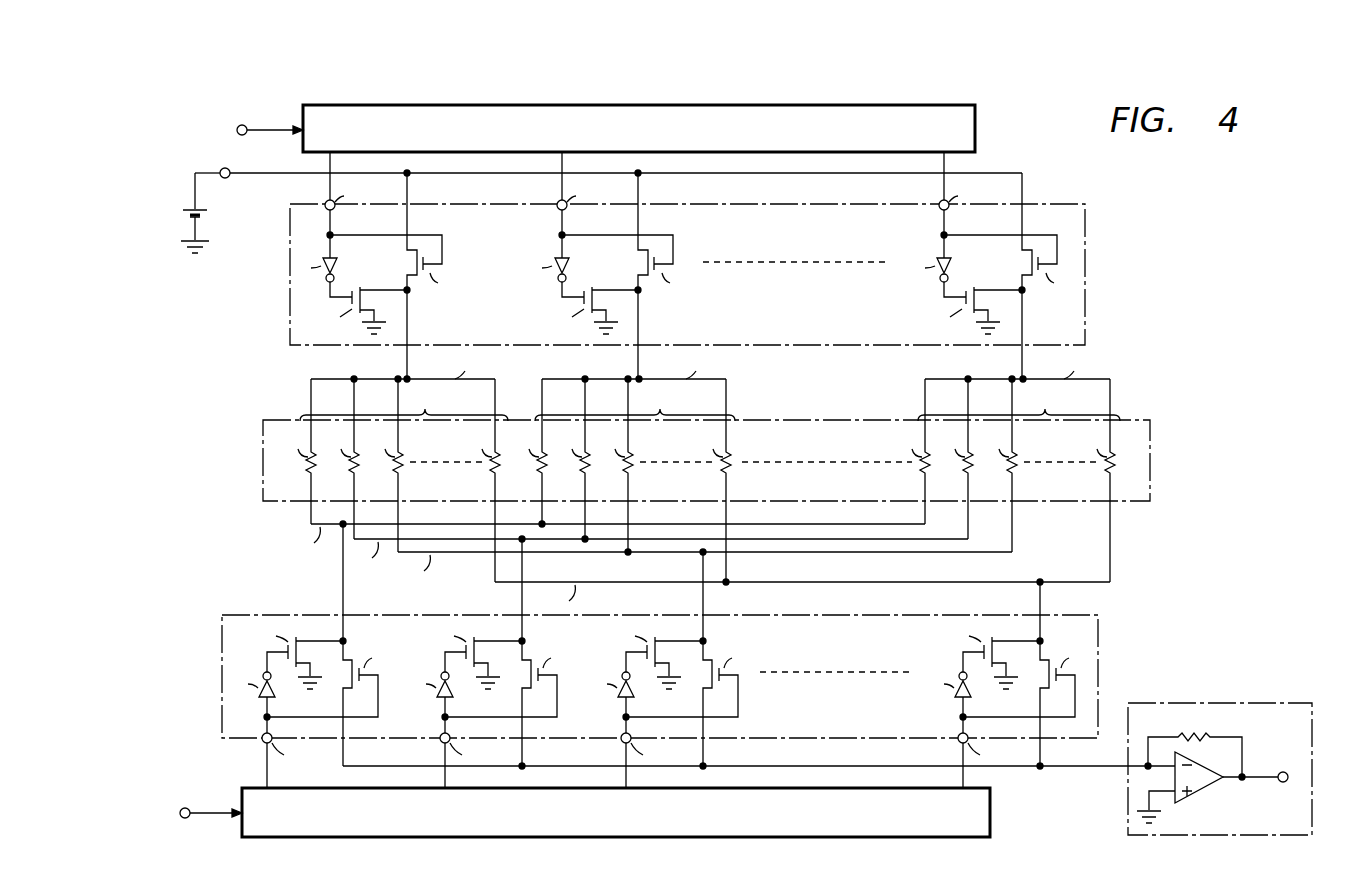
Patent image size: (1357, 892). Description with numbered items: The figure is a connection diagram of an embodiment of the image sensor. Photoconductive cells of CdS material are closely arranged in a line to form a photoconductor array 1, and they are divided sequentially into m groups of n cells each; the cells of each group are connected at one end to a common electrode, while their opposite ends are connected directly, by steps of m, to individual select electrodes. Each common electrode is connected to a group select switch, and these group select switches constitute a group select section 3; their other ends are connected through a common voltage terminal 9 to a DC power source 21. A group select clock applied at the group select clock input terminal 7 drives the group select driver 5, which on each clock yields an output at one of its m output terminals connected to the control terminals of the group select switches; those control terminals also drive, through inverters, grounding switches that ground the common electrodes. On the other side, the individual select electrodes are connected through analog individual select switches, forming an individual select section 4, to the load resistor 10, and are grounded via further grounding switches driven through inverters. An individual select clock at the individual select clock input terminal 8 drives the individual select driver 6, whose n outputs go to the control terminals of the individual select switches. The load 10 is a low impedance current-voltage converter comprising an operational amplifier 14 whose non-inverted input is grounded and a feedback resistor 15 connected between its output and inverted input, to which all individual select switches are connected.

The photoconductor array 1 is at (1150, 440).
The group select section 3 is at (1092, 232).
The individual select section 4 is at (1098, 640).
The group select driver 5 is at (975, 122).
The individual select driver 6 is at (990, 803).
The group select clock input terminal 7 is at (238, 125).
The individual select clock input terminal 8 is at (184, 807).
The common voltage terminal 9 is at (221, 168).
The load resistor 10 is at (1220, 740).
The operational amplifier 14 is at (1205, 790).
The feedback resistor 15 is at (1193, 733).
The DC power source 21 is at (208, 214).